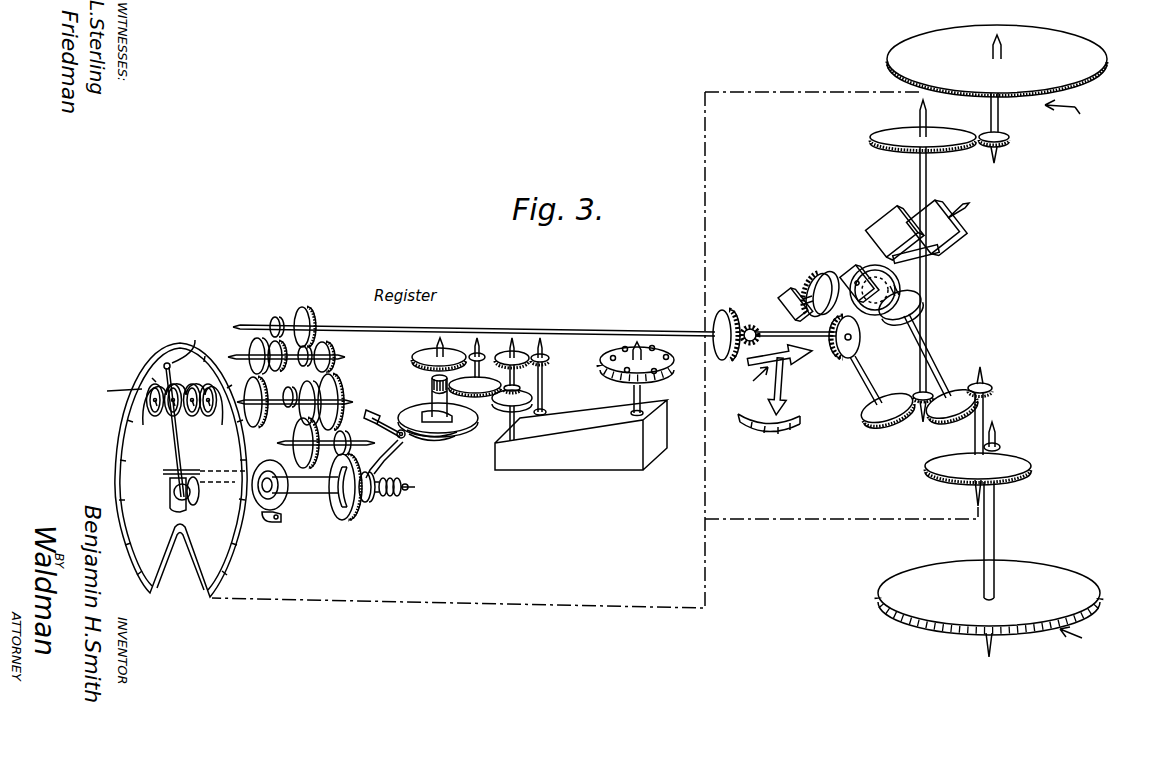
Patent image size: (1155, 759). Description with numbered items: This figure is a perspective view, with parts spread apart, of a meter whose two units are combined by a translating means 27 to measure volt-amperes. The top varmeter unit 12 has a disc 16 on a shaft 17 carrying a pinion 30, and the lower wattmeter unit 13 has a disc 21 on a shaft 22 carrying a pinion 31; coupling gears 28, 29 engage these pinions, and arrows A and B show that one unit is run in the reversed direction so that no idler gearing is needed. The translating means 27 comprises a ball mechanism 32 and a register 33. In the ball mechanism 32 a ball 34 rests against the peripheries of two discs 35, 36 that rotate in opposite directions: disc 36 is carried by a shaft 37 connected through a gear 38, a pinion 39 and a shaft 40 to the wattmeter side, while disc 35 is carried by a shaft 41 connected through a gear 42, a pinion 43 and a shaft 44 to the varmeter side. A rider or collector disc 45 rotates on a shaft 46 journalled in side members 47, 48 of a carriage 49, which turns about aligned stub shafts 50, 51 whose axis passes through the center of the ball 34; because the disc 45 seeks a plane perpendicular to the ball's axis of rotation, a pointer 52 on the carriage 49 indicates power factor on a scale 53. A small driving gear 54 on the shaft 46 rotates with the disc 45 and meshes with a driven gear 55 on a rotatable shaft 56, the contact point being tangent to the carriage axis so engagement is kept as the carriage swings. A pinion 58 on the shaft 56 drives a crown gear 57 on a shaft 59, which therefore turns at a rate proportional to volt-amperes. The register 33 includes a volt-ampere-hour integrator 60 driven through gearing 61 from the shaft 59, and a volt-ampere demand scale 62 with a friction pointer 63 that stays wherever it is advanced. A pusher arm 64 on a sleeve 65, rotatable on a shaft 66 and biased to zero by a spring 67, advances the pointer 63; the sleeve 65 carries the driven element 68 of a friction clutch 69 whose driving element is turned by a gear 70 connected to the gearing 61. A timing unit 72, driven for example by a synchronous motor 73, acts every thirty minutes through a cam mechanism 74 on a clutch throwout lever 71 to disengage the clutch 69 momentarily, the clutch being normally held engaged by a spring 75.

The varmeter unit 12 is at (1083, 25).
The disc 16 is at (1107, 69).
The var meter shaft 17 is at (1000, 116).
The arrow A is at (1066, 113).
The pinion 30 is at (1010, 140).
The coupling gear 28 is at (870, 137).
The shaft 44 is at (927, 177).
The pinion 43 is at (915, 388).
The ball mechanism 32 is at (705, 123).
The side member 47 is at (890, 220).
The side member 48 is at (950, 241).
The carriage 49 is at (958, 265).
The stub shaft 51 is at (968, 218).
The ball 34 is at (866, 268).
The driving gear 54 is at (857, 276).
The disc 36 is at (918, 300).
The rider or collector disc 45 is at (822, 273).
The disc 35 is at (812, 290).
The shaft 46 is at (797, 298).
The shaft 59 is at (704, 328).
The crown gear 57 is at (728, 320).
The pinion 58 is at (752, 327).
The rotatable shaft 56 is at (778, 326).
The driven gear 55 is at (860, 337).
The shaft 41 is at (870, 352).
The gear 42 is at (878, 426).
The shaft 37 is at (930, 360).
The gear 38 is at (936, 424).
The scale 53 is at (800, 418).
The stub shaft 50 is at (752, 375).
The pointer 52 is at (785, 387).
The pinion 39 is at (994, 386).
The shaft 40 is at (986, 411).
The pinion 31 is at (1002, 446).
The coupling gear 29 is at (925, 470).
The watt meter shaft 22 is at (996, 521).
The disc 21 is at (1092, 590).
The arrow B is at (1077, 640).
The wattmeter unit 13 is at (1005, 640).
The timing unit 72 is at (573, 497).
The synchronous motor 73 is at (666, 355).
The cam mechanism 74 is at (454, 468).
The clutch throwout lever 71 is at (393, 441).
The translating means 27 is at (286, 306).
The gearing 61 is at (244, 378).
The friction clutch 69 is at (346, 555).
The pusher arm 64 is at (256, 468).
The sleeve 65 is at (305, 494).
The driven element 68 is at (334, 512).
The gear 70 is at (350, 515).
The spring 75 is at (385, 478).
The shaft 66 is at (398, 491).
The spring 67 is at (274, 522).
The volt-ampere demand scale 62 is at (152, 459).
The volt-ampere-hour integrator 60 is at (146, 411).
The friction pointer 63 is at (176, 443).
The register 33 is at (141, 365).